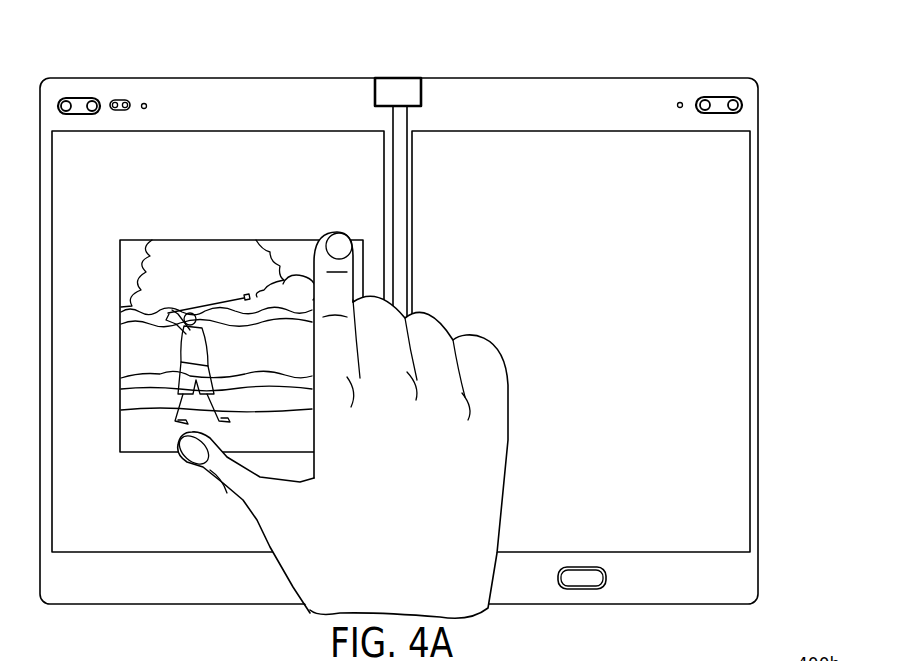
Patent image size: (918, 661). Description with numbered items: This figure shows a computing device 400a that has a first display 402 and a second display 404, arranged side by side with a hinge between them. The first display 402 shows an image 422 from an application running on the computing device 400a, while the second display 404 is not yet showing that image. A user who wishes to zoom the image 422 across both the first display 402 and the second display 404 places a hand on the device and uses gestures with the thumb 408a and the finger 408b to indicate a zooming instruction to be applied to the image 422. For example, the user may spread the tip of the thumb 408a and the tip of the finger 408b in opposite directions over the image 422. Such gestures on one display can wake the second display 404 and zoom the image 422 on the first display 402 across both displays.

The computing device 400a is at (745, 62).
The first display 402 is at (213, 130).
The second display 404 is at (548, 130).
The thumb 408a is at (243, 472).
The finger 408b is at (335, 292).
The image 422 is at (241, 346).